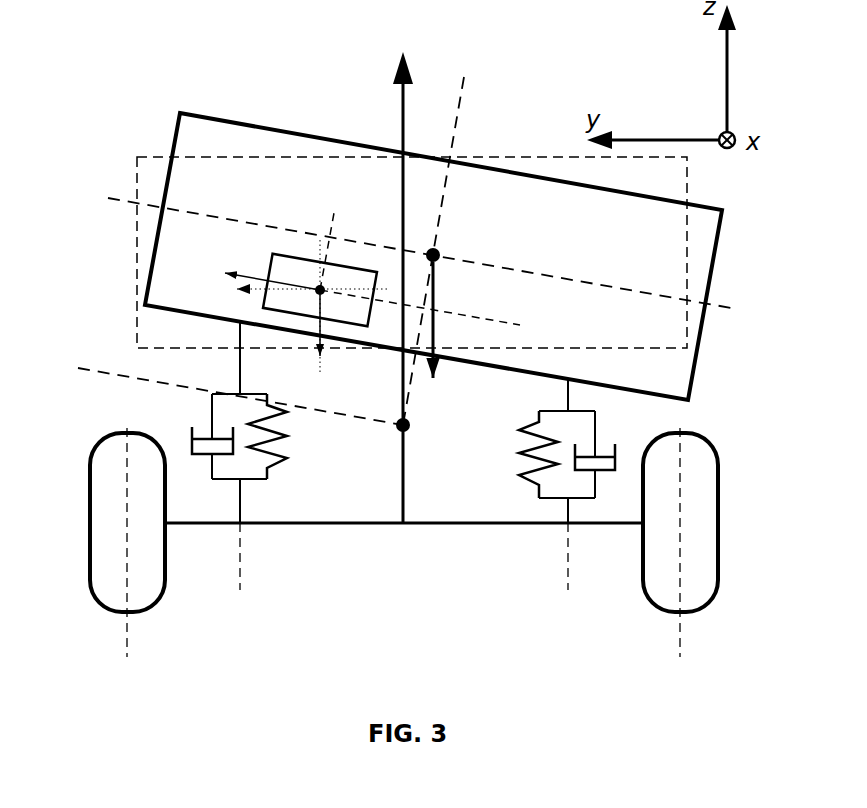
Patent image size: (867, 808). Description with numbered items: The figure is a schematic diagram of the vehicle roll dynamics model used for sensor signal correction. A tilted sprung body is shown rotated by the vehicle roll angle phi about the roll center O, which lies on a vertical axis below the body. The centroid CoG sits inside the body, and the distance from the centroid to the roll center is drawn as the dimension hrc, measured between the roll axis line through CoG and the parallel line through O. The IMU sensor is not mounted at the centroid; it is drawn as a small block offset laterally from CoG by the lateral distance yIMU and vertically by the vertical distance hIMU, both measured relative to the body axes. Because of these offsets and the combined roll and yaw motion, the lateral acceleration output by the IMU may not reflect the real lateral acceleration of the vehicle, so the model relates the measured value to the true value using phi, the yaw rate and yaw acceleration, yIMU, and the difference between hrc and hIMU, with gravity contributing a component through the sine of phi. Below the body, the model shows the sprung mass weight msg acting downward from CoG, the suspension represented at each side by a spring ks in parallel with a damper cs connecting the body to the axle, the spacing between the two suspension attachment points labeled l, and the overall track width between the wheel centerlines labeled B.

The IMU sensor IMU is at (372, 294).
The centroid CoG is at (475, 237).
The roll center O is at (386, 440).
The suspension spring stiffness ks is at (403, 452).
The suspension damping coefficient cs is at (406, 452).
The gravitational force on sprung mass msg is at (458, 339).
The distance from centroid to the roll center hrc is at (125, 201).
The vertical distance from IMU mounting position to the centroid hIMU is at (480, 263).
The lateral distance from the sensor mounting position to the centroid yIMU is at (436, 238).
The vehicle roll angle phi is at (458, 98).
The suspension spacing l is at (240, 583).
The track width B is at (680, 648).